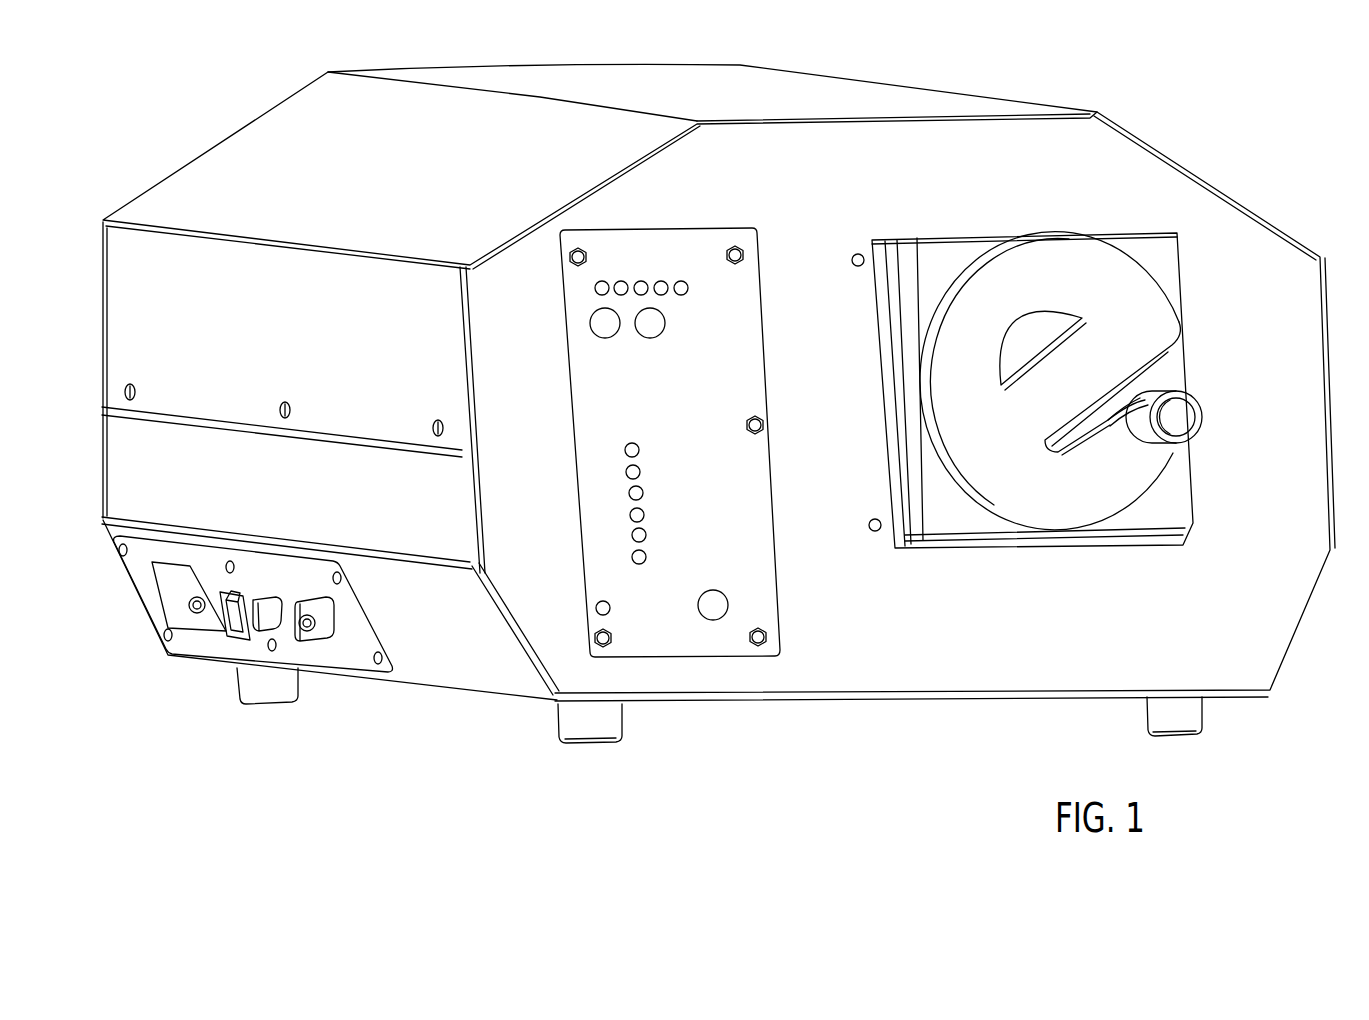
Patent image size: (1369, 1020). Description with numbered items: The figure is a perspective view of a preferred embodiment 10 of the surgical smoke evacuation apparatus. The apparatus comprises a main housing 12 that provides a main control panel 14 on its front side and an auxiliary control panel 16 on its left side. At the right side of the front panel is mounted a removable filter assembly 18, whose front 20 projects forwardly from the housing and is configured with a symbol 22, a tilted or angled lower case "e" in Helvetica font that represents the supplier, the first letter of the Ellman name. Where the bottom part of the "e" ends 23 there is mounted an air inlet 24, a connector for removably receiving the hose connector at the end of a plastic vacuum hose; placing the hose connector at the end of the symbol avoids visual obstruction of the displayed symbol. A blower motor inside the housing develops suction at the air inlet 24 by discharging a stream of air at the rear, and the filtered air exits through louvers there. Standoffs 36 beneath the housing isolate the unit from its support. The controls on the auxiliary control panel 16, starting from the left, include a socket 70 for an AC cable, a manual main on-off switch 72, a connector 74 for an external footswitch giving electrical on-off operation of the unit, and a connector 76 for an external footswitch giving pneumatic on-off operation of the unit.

The preferred embodiment of the surgical smoke evacuation apparatus 10 is at (983, 81).
The main housing 12 is at (753, 65).
The main control panel 14 is at (947, 673).
The auxiliary control panel 16 is at (352, 658).
The removable filter assembly 18 is at (1180, 230).
The front of the filter assembly 20 is at (1185, 503).
The symbol 22 is at (1082, 510).
The end of the bottom part of the "e" 23 is at (1182, 460).
The air inlet 24 is at (1200, 407).
The standoffs 36 is at (610, 730).
The socket 70 is at (188, 605).
The manual main on-off switch 72 is at (233, 632).
The connector 74 is at (277, 620).
The connector 76 is at (323, 637).